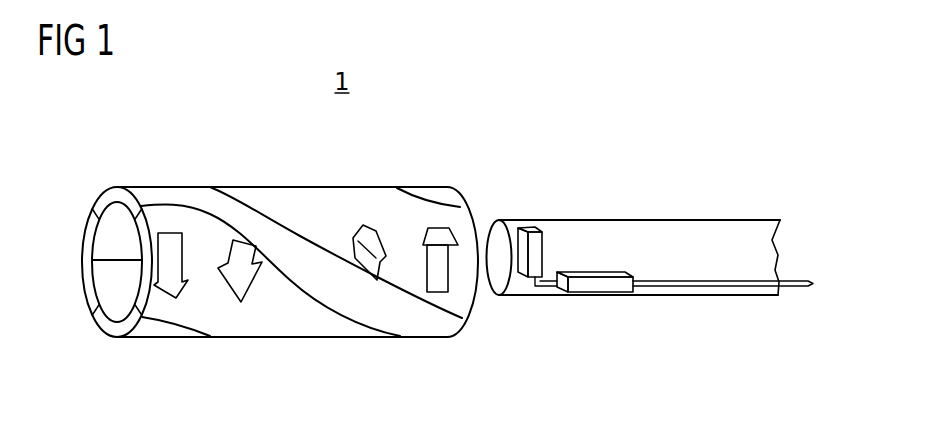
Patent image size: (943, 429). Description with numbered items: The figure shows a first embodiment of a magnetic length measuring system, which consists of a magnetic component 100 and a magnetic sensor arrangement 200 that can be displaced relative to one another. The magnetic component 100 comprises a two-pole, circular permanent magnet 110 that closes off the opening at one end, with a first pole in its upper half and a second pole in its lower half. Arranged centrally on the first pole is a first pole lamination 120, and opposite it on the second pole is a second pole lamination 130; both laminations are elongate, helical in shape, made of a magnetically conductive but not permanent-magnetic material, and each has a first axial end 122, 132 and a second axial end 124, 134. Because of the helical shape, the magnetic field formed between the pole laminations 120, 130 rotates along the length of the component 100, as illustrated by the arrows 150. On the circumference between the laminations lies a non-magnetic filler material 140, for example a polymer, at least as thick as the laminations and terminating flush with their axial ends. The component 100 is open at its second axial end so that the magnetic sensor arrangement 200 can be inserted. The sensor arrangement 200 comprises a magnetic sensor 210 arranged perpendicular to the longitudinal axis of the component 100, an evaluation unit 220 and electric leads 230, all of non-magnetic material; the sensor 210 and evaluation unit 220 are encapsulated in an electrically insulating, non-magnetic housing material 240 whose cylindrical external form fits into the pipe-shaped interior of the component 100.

The magnetic component 100 is at (233, 96).
The permanent magnet 110 is at (103, 244).
The first pole lamination 120 is at (252, 206).
The first axial end 122 is at (112, 200).
The second axial end 124 is at (462, 330).
The second pole lamination 130 is at (428, 192).
The first axial end 132 is at (108, 327).
The second axial end 134 is at (462, 200).
The filler material 140 is at (464, 288).
The arrows 150 is at (168, 245).
The magnetic sensor arrangement 200 is at (751, 174).
The magnetic sensor 210 is at (530, 227).
The evaluation unit 220 is at (605, 288).
The electric leads 230 is at (545, 288).
The housing material 240 is at (676, 224).